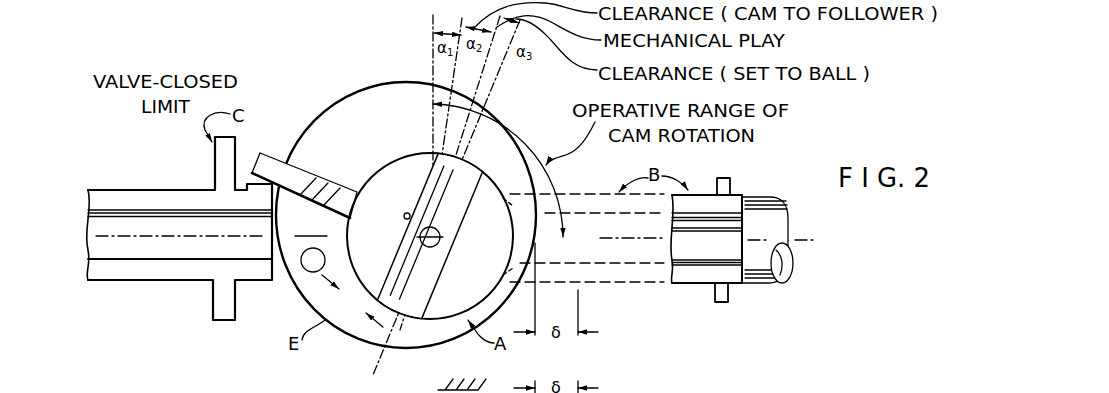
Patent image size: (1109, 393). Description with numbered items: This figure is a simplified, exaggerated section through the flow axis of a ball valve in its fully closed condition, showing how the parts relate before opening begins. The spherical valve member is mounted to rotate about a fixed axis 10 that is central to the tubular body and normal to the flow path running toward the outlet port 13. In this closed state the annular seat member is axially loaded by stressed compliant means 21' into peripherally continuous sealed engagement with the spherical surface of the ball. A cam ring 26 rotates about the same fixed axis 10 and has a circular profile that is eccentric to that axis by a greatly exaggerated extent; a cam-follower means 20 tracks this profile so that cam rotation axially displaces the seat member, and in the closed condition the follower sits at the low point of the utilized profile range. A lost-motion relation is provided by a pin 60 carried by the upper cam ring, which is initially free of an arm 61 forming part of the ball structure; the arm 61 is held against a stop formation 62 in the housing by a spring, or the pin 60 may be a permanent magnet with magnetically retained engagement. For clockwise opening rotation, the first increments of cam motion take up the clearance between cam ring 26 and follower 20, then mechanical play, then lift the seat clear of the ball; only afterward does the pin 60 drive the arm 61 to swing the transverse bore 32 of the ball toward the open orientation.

The fixed axis 10 is at (438, 228).
The outlet port 13 is at (88, 270).
The cam-follower means 20 is at (545, 238).
The stressed compliant means 21' is at (759, 242).
The cam ring 26 is at (357, 333).
The transverse bore 32 is at (412, 321).
The pin 60 is at (303, 269).
The arm 61 is at (313, 189).
The stop formation 62 is at (294, 164).